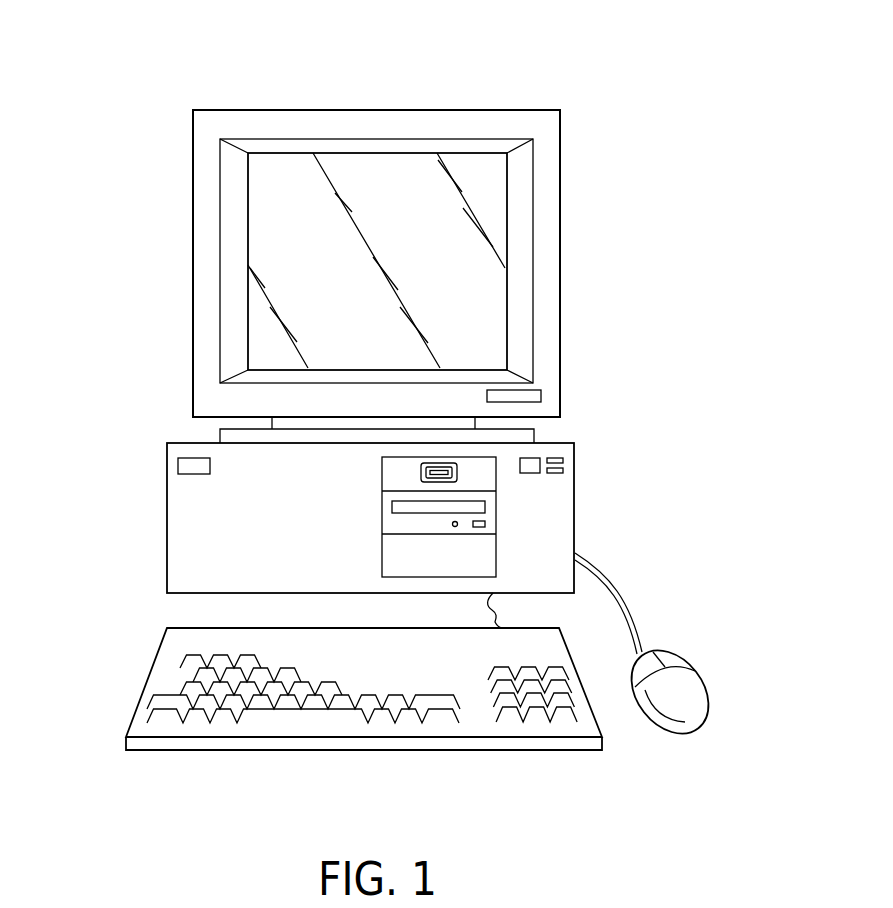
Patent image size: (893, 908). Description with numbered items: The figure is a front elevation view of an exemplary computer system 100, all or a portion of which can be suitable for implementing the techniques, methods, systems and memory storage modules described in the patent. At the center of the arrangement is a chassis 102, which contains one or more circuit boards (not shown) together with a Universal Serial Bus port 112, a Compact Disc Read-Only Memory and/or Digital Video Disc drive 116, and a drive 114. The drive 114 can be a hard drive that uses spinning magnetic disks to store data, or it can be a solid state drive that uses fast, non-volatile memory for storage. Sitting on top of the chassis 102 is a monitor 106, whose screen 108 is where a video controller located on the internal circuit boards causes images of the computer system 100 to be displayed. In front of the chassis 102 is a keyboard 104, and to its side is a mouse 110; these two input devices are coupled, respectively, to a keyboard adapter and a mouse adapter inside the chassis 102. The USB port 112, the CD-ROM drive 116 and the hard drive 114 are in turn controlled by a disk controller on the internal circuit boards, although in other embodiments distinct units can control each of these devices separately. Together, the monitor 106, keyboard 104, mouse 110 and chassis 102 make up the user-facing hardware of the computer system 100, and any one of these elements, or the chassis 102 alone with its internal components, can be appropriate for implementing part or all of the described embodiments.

The computer system 100 is at (558, 77).
The chassis 102 is at (167, 520).
The keyboard 104 is at (148, 672).
The monitor 106 is at (265, 110).
The screen 108 is at (297, 265).
The mouse 110 is at (688, 682).
The Universal Serial Bus (USB) port 112 is at (457, 470).
The drive 114 is at (487, 553).
The Compact Disc Read-Only Memory (CD-ROM) and/or Digital Video Disc (DVD) drive 116 is at (487, 513).